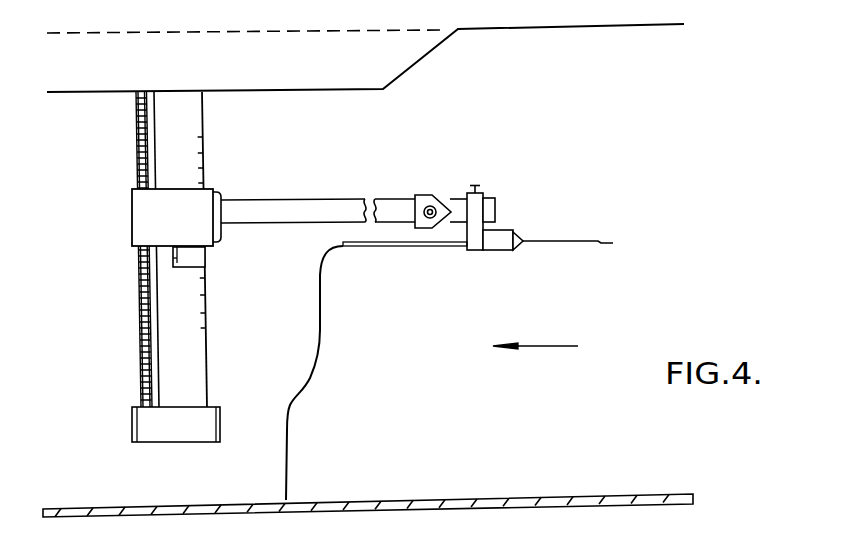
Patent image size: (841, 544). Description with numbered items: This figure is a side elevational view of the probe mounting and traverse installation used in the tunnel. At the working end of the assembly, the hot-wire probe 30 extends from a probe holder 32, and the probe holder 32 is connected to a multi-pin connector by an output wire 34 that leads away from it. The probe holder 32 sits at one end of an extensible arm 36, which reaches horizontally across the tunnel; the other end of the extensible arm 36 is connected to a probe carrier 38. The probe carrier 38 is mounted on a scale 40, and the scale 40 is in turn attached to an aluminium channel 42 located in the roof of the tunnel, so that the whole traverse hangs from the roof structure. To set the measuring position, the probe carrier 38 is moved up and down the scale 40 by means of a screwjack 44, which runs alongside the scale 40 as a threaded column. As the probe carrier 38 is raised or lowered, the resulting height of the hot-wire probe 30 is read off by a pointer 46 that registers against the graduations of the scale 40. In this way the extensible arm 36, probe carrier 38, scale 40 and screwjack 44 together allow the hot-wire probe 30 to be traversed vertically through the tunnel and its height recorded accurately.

The hot-wire probe 30 is at (578, 241).
The probe holder 32 is at (516, 236).
The output wire 34 is at (322, 338).
The extensible arm 36 is at (381, 200).
The probe carrier 38 is at (212, 187).
The scale 40 is at (206, 270).
The aluminium channel 42 is at (338, 90).
The screwjack 44 is at (140, 296).
The pointer 46 is at (188, 267).